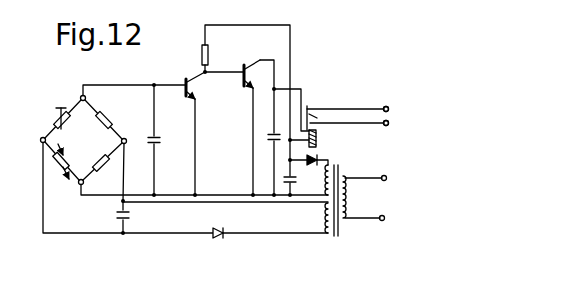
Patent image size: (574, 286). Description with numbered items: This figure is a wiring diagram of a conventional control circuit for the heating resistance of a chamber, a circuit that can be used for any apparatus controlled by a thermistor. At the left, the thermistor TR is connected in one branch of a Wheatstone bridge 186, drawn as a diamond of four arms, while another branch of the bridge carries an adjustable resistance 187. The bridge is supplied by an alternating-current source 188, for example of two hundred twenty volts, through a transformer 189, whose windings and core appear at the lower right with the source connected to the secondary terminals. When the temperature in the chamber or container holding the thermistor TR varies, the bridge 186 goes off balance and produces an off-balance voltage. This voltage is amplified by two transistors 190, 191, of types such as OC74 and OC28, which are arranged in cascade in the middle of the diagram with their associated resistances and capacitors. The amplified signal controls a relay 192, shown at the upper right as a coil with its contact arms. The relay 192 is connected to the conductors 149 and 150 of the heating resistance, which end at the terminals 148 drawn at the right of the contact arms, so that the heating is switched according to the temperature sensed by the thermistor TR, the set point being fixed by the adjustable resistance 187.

The thermistor TR is at (57, 119).
The adjustable resistance 187 is at (67, 163).
The Wheatstone bridge 186 is at (73, 182).
The transistor 190 is at (184, 81).
The transistor 191 is at (243, 78).
The relay 192 is at (314, 103).
The conductor 149 is at (347, 109).
The conductor 150 is at (347, 126).
The output terminals 148 is at (395, 114).
The alternating-current source 188 is at (386, 197).
The transformer 189 is at (341, 240).